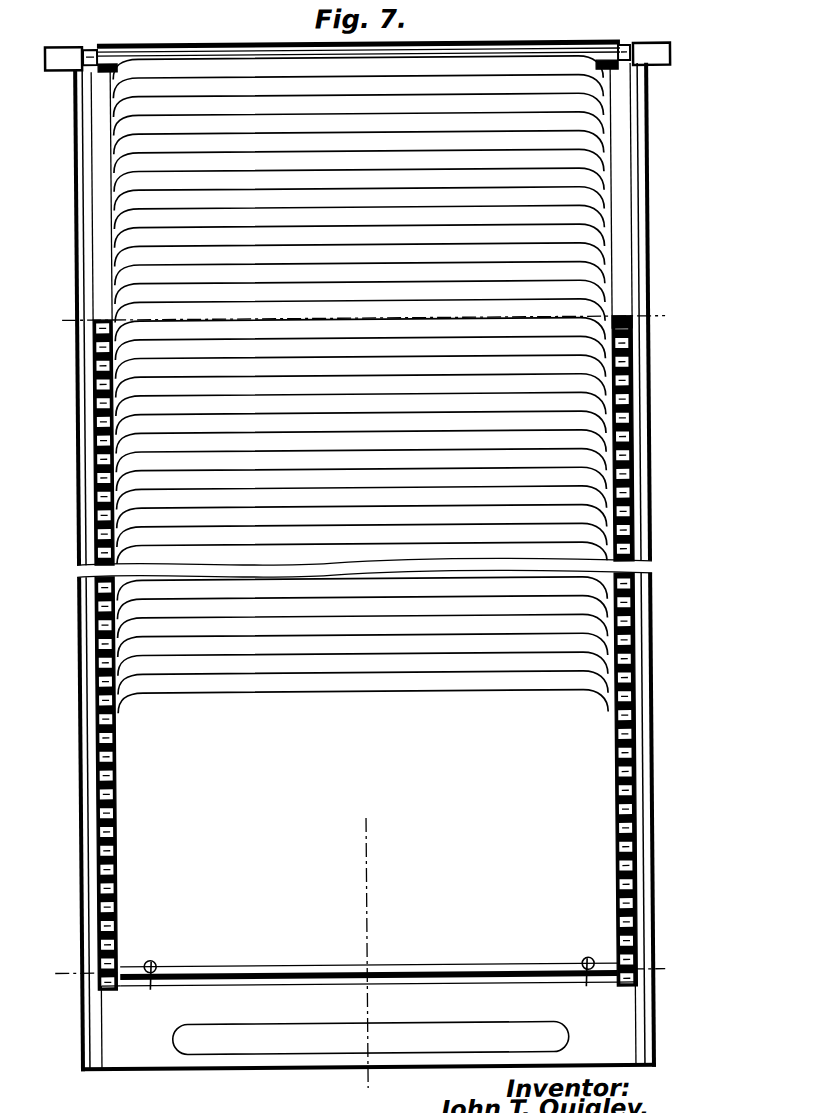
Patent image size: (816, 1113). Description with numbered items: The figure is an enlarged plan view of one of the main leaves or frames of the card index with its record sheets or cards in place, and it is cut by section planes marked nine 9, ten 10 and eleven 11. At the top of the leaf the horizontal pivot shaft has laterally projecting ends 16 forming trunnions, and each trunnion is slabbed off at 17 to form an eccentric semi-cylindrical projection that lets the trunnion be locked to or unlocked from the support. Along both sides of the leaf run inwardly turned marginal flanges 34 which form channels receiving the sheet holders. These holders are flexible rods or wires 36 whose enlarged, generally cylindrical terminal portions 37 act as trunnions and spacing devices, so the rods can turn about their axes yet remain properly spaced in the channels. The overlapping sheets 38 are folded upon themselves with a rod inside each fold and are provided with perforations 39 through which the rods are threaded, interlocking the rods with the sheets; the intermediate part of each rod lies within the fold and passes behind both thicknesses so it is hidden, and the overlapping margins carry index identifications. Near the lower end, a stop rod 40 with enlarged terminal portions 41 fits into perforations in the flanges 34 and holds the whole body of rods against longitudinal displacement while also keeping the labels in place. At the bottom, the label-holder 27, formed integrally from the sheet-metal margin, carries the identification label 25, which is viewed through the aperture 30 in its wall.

The section line 9- 9 is at (364, 817).
The section line 10- 10 is at (64, 972).
The section line 11- 11 is at (64, 322).
The laterally projecting ends 16 is at (92, 50).
The slabbed-off portion 17 is at (60, 55).
The identification label 25 is at (224, 1046).
The label-holder 27 is at (163, 1069).
The aperture 30 is at (272, 1054).
The inwardly turned marginal flanges 34 is at (80, 739).
The flexible rods 36 is at (365, 984).
The enlarged terminal portions 37 is at (96, 503).
The overlapping sheets 38 is at (591, 440).
The perforations 39 is at (151, 958).
The stop rods 40 is at (603, 980).
The enlarged terminal portions 41 is at (632, 328).